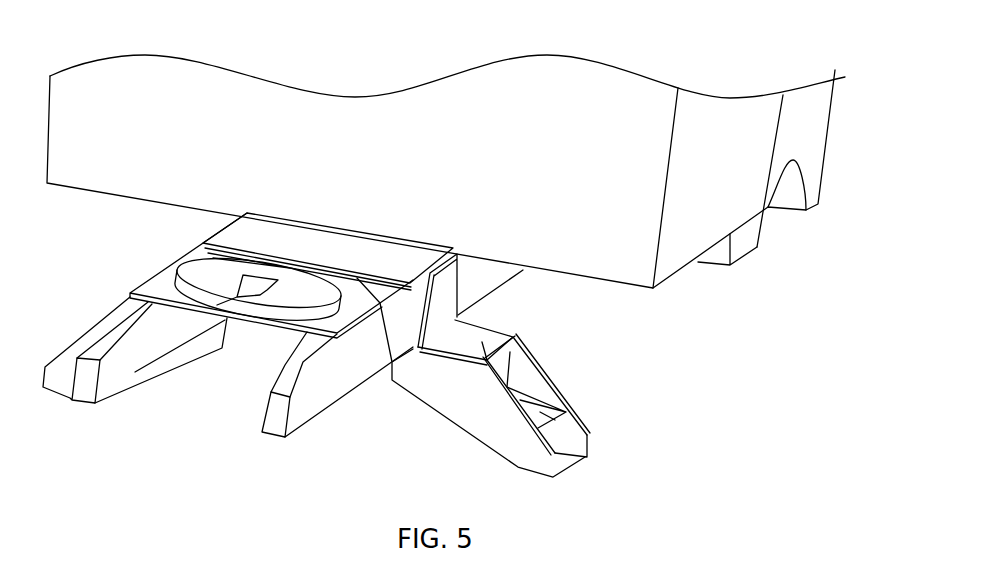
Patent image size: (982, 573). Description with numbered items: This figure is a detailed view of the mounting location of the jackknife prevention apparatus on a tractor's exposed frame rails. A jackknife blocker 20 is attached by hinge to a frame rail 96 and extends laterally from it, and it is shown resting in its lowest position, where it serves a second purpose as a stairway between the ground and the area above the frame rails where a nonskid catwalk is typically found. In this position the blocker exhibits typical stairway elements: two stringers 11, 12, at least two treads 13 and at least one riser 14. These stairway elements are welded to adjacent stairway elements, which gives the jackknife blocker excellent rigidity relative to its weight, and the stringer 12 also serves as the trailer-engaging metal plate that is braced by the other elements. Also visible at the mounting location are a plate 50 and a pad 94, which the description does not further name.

The stringer 11 is at (535, 385).
The stringer 12 is at (515, 453).
The tread 13 is at (482, 342).
The riser 14 is at (512, 352).
The jackknife blocker 20 is at (412, 438).
The mounting plate 50 is at (205, 277).
The pad 94 is at (322, 238).
The frame rail 96 is at (313, 393).